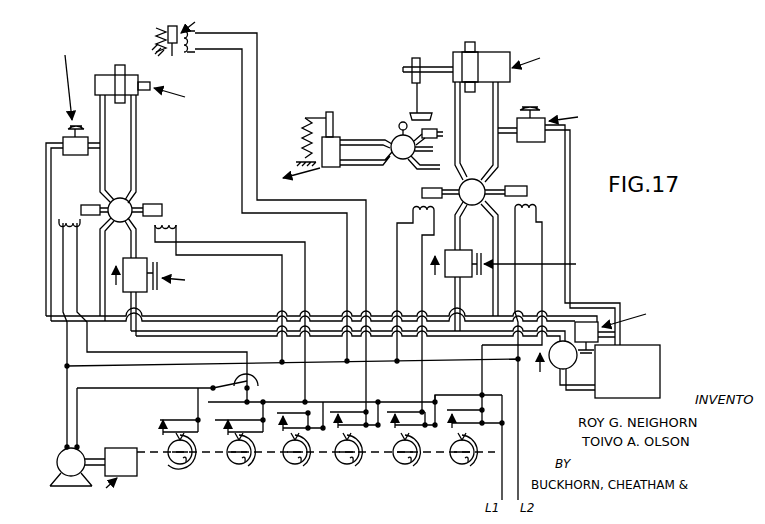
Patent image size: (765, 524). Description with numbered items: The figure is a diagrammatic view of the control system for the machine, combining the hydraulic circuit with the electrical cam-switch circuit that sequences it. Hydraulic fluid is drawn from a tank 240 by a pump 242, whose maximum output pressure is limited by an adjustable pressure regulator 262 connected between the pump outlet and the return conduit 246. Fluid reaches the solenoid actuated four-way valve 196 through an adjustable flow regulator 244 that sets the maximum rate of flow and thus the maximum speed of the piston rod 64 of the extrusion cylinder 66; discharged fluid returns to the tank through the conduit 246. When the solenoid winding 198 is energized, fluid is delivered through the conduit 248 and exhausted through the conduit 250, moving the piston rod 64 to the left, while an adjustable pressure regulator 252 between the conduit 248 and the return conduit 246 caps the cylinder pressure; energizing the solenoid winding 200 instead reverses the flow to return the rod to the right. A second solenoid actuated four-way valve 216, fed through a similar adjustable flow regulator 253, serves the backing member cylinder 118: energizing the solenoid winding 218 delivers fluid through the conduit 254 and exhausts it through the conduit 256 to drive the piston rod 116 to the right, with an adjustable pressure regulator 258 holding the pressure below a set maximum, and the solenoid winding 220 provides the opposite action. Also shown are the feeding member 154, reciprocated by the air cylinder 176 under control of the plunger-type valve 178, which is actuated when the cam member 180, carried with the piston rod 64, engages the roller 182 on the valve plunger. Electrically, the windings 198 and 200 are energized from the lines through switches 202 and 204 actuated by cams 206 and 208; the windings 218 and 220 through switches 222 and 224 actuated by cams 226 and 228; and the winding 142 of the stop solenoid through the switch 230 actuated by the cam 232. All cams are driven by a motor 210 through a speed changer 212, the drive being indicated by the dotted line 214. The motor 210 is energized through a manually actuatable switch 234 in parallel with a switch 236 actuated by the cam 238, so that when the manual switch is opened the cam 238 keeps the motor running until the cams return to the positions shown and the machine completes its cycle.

The piston rod 64 is at (430, 64).
The hydraulic cylinder 66 is at (466, 52).
The piston rod 116 is at (143, 84).
The backing member cylinder 118 is at (105, 76).
The winding of the stop solenoid 142 is at (197, 40).
The feeding member 154 is at (333, 122).
The air cylinder 176 is at (336, 148).
The valve 178 is at (393, 137).
The cam member 180 is at (422, 116).
The roller 182 is at (403, 120).
The solenoid actuated four-way valve 196 is at (485, 185).
The solenoid winding 198 is at (538, 218).
The solenoid winding 200 is at (412, 210).
The switch 202 is at (452, 440).
The switch 204 is at (396, 440).
The cam 206 is at (472, 462).
The cam 208 is at (410, 462).
The motor 210 is at (60, 452).
The speed changer 212 is at (137, 468).
The dotted line 214 is at (284, 440).
The solenoid actuated four-way valve 216 is at (108, 202).
The solenoid winding 218 is at (150, 325).
The solenoid winding 220 is at (168, 216).
The switch 222 is at (232, 460).
The switch 224 is at (292, 466).
The cam 226 is at (247, 462).
The cam 228 is at (313, 462).
The switch 230 is at (340, 440).
The cam 232 is at (360, 466).
The manually actuatable switch 234 is at (182, 388).
The switch 236 is at (162, 432).
The cam 238 is at (183, 468).
The tank 240 is at (650, 350).
The pump 242 is at (558, 365).
The adjustable flow regulator 244 is at (462, 252).
The return conduit 246 is at (560, 306).
The conduit 248 is at (500, 100).
The conduit 250 is at (456, 145).
The adjustable pressure regulator 252 is at (530, 143).
The adjustable flow regulator 253 is at (118, 286).
The conduit 254 is at (104, 182).
The conduit 256 is at (137, 182).
The adjustable pressure regulator 258 is at (63, 140).
The adjustable pressure regulator 262 is at (600, 333).